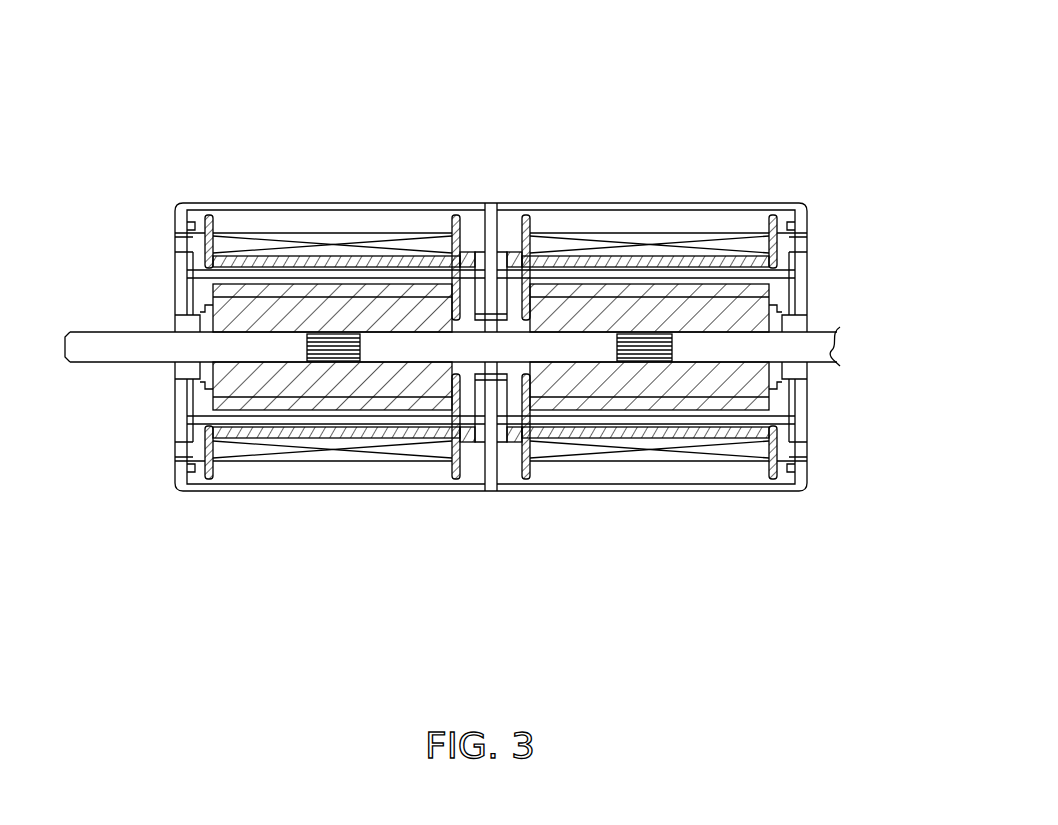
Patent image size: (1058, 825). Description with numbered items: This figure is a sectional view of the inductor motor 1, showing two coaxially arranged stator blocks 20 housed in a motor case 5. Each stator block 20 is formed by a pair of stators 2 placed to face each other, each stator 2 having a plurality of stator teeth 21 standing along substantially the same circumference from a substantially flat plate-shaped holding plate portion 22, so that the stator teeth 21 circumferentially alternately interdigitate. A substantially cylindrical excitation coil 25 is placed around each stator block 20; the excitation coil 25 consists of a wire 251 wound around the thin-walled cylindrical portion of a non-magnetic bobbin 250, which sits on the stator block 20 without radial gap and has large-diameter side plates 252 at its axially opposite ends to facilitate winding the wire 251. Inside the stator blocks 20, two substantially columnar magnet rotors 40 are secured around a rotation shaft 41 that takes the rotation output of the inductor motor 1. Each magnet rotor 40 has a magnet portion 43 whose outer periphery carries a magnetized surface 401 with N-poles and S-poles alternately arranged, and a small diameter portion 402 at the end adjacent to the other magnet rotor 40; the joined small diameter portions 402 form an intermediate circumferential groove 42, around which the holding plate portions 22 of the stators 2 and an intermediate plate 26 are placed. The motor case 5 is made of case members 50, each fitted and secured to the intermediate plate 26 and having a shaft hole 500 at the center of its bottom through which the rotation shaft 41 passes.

The inductor motor 1 is at (757, 93).
The stator 2 is at (365, 270).
The motor case 5 is at (742, 503).
The stator block 20 is at (227, 263).
The stator teeth 21 is at (288, 418).
The holding plate portion 22 is at (790, 290).
The excitation coil 25 is at (712, 223).
The intermediate plate 26 is at (490, 465).
The magnet rotor 40 is at (307, 280).
The rotation shaft 41 is at (138, 345).
The intermediate circumferential groove 42 is at (515, 270).
The magnet portion 43 is at (332, 310).
The case member 50 is at (267, 493).
The bobbin 250 is at (662, 257).
The wire 251 is at (625, 237).
The side plates 252 is at (787, 233).
The magnetized surface 401 is at (260, 283).
The small diameter portion 402 is at (468, 318).
The shaft hole 500 is at (793, 333).